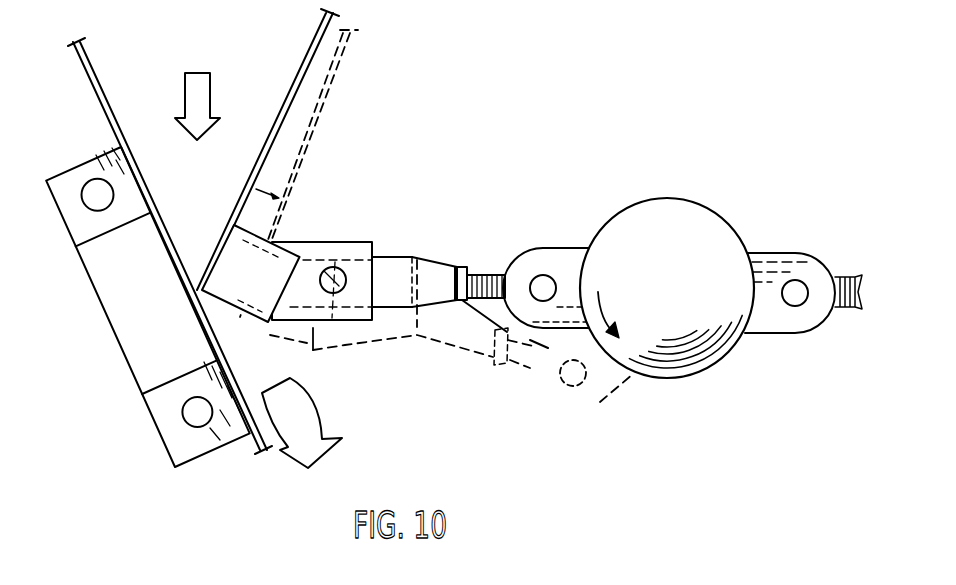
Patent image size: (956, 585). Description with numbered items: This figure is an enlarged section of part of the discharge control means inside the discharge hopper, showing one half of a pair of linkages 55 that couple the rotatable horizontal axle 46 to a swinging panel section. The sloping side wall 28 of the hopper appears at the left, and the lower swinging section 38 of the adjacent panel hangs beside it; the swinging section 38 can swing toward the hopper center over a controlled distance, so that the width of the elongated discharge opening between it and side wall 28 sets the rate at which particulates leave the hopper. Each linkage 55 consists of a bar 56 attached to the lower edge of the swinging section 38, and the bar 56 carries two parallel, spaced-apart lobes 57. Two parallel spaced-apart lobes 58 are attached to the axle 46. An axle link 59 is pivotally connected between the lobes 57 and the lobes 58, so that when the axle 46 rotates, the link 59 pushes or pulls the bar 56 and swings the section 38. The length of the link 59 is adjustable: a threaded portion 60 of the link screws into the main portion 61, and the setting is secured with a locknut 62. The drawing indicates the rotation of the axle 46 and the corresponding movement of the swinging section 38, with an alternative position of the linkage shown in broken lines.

The sloping side wall 28 is at (103, 100).
The lower swinging section 38 is at (273, 127).
The rotatable horizontal axle 46 is at (687, 197).
The linkage 55 is at (412, 406).
The bar 56 is at (267, 240).
The lobes 57 is at (320, 242).
The lobes 58 is at (557, 248).
The axle link 59 is at (437, 260).
The threaded portion 60 is at (483, 277).
The main portion 61 is at (390, 257).
The locknut 62 is at (473, 265).